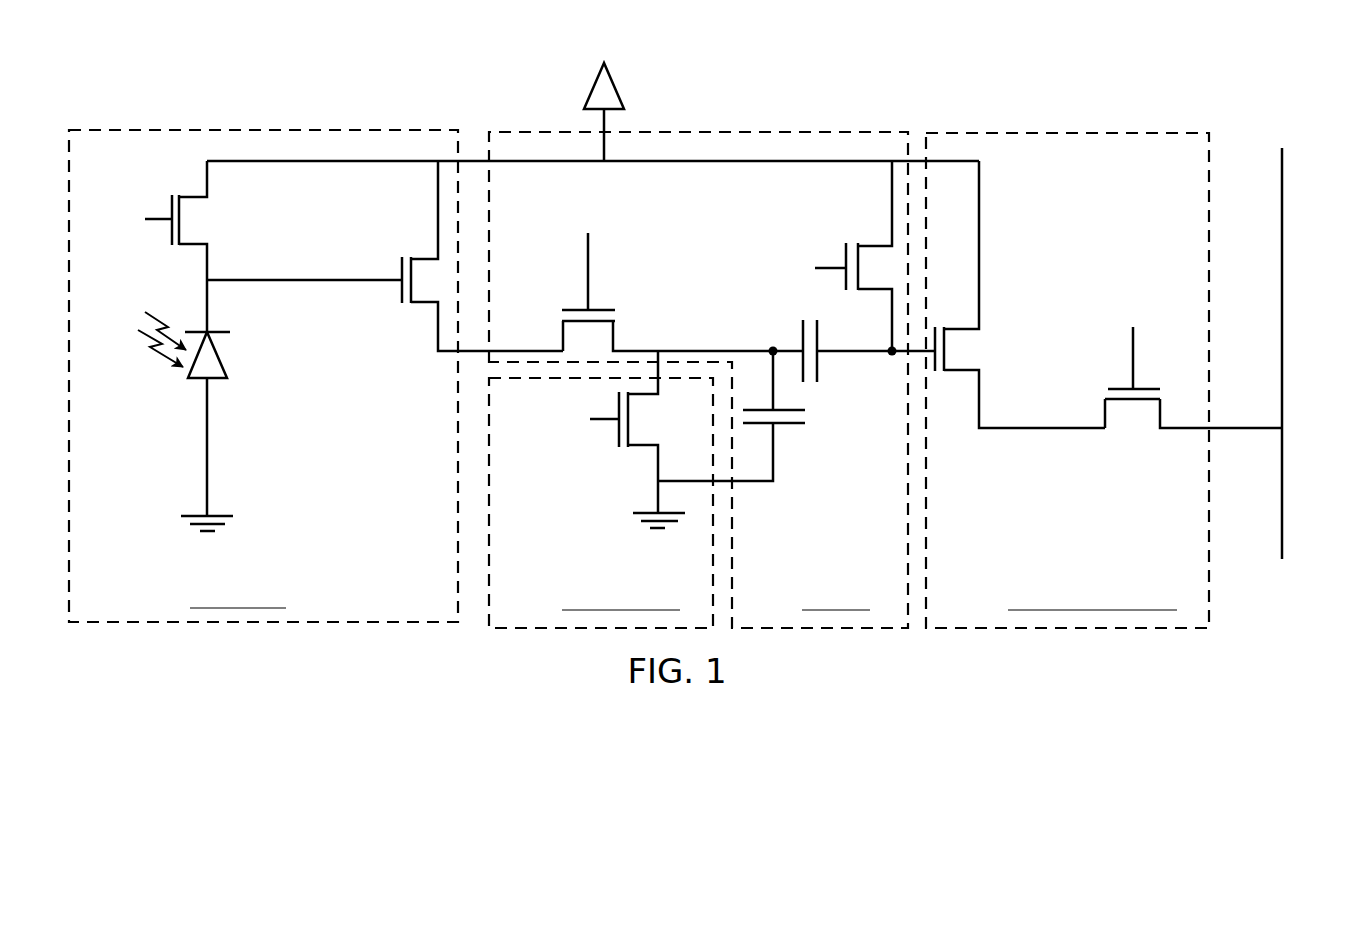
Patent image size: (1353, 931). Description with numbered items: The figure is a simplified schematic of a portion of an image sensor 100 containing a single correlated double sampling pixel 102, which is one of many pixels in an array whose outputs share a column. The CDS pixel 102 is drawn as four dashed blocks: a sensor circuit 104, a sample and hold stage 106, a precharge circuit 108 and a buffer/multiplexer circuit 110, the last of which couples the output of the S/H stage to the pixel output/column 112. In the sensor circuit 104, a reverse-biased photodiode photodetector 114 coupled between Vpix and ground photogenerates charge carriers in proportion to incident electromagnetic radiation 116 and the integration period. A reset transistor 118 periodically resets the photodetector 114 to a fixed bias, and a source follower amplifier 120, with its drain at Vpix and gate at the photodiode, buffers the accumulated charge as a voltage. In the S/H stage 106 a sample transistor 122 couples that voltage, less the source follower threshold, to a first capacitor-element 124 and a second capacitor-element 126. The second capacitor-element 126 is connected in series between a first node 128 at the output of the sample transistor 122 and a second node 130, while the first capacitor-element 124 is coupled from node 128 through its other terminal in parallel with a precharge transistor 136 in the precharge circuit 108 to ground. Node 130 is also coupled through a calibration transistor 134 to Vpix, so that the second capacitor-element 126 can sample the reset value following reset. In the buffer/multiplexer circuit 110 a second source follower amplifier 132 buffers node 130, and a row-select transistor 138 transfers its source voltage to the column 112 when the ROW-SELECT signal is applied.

The image sensor 100 is at (87, 94).
The correlated double sampling (CDS) pixel 102 is at (1228, 132).
The sensor circuit 104 is at (87, 609).
The sample and hold (S/H) stage 106 is at (743, 609).
The precharge circuit 108 is at (500, 609).
The buffer/multiplexer circuit 110 is at (938, 609).
The pixel output/column 112 is at (1283, 541).
The photodetector 114 is at (222, 359).
The electromagnetic radiation 116 is at (148, 343).
The reset transistor 118 is at (160, 198).
The source follower amplifier 120 is at (390, 267).
The sample transistor 122 is at (568, 298).
The capacitor-element C1 124 is at (747, 408).
The capacitor-element C2 126 is at (819, 338).
The node 128 is at (772, 349).
The node 130 is at (891, 357).
The second source follower amplifier 132 is at (985, 346).
The calibration transistor 134 is at (842, 258).
The precharge transistor 136 is at (622, 456).
The row-select transistor 138 is at (1131, 434).